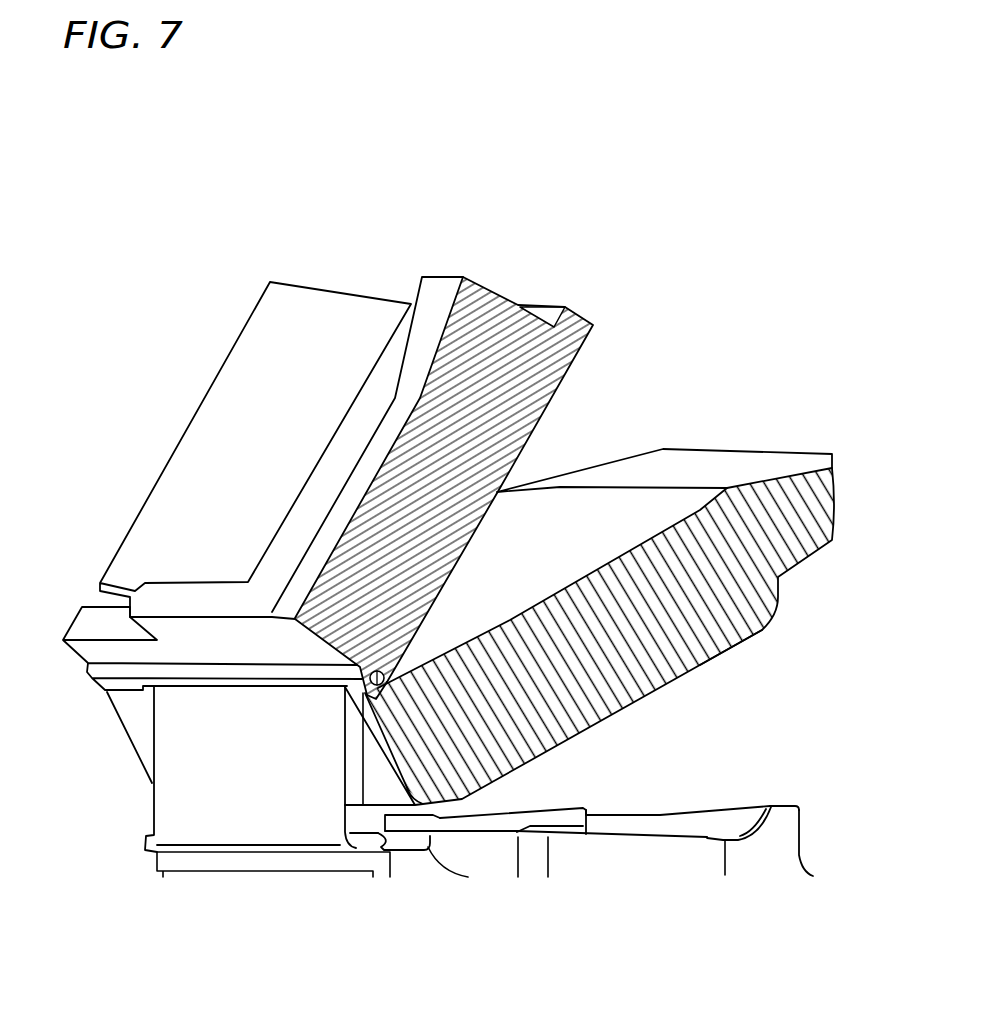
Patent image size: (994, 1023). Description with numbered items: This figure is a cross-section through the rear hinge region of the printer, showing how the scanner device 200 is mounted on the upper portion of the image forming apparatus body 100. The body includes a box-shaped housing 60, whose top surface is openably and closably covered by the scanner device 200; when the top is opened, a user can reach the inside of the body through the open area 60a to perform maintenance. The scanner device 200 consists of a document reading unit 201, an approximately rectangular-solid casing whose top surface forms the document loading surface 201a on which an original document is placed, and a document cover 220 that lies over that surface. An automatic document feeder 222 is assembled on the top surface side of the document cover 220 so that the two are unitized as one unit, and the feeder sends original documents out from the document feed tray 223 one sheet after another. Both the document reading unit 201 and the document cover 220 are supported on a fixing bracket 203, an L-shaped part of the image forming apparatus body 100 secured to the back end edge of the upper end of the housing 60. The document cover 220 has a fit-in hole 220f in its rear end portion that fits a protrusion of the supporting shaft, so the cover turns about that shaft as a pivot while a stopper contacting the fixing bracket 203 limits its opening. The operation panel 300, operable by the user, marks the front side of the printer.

The housing 60 is at (790, 805).
The open area 60a is at (663, 823).
The image forming apparatus body 100 is at (806, 851).
The scanner device 200 is at (50, 682).
The document reading unit 201 is at (605, 719).
The document loading surface 201a is at (563, 520).
The fixing bracket 203 is at (202, 768).
The document cover 220 is at (518, 327).
The fit-in hole 220f is at (388, 674).
The automatic document feeder 222 is at (440, 297).
The document feed tray 223 is at (197, 477).
The operation panel 300 is at (782, 478).